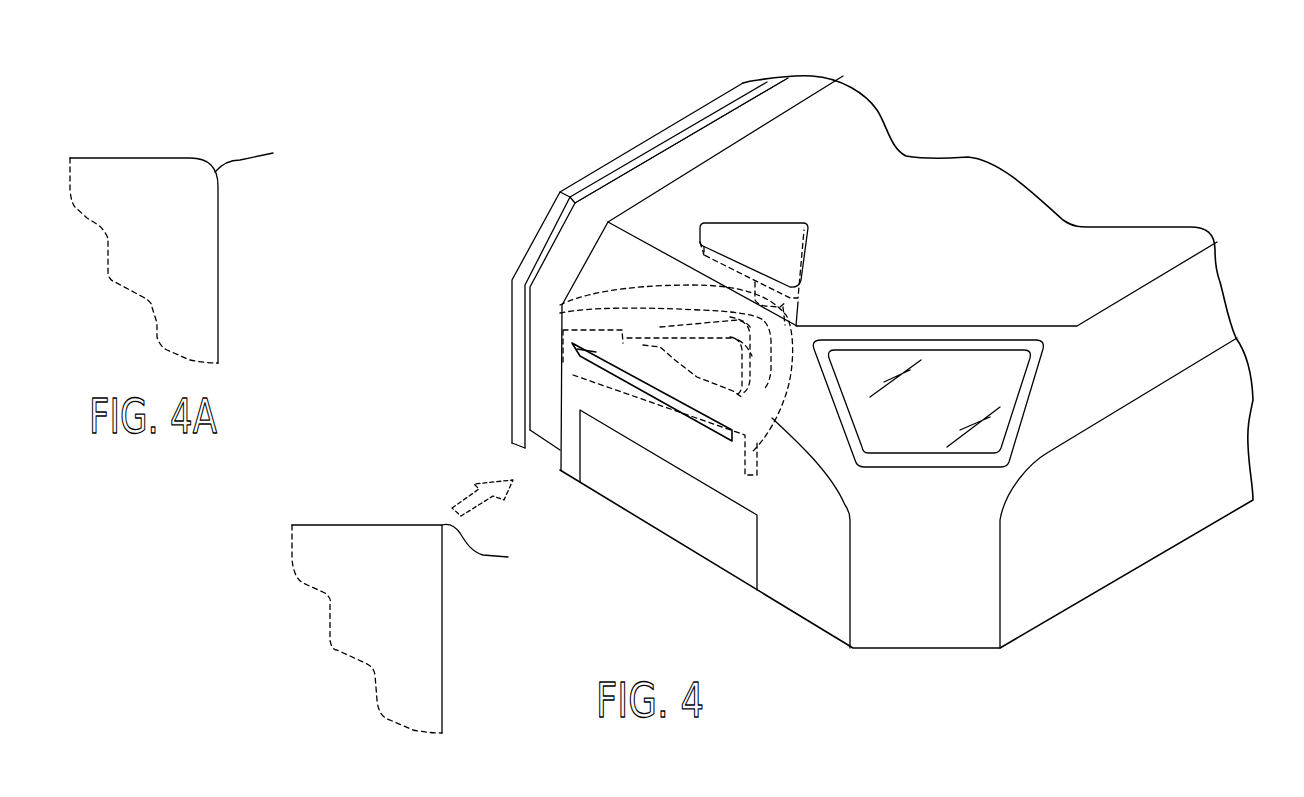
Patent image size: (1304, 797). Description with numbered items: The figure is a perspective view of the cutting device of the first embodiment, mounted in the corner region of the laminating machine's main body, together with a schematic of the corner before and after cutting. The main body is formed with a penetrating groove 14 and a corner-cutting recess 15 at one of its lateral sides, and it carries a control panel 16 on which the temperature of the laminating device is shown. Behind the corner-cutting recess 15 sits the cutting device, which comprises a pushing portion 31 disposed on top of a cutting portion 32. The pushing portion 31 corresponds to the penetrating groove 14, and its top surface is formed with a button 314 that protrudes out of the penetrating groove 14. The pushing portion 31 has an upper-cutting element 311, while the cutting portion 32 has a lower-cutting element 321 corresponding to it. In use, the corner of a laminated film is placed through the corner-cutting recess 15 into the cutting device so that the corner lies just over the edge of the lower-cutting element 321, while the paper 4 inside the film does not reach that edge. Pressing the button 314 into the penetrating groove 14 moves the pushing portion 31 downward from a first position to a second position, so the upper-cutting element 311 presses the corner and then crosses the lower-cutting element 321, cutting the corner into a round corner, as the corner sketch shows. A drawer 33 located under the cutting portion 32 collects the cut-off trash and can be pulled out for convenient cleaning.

In FIG. 4, the paper 4 is at (418, 622).
In FIG. 4A, the paper 4 is at (202, 257).
In FIG. 4, the penetrating groove 14 is at (807, 223).
In FIG. 4, the corner-cutting recess 15 is at (630, 377).
In FIG. 4, the control panel 16 is at (993, 387).
In FIG. 4, the pushing portion 31 is at (683, 30).
In FIG. 4, the upper-cutting element 311 is at (708, 332).
In FIG. 4, the button 314 is at (755, 243).
In FIG. 4, the cutting portion 32 is at (573, 343).
In FIG. 4, the lower-cutting element 321 is at (710, 357).
In FIG. 4, the drawer 33 is at (701, 525).